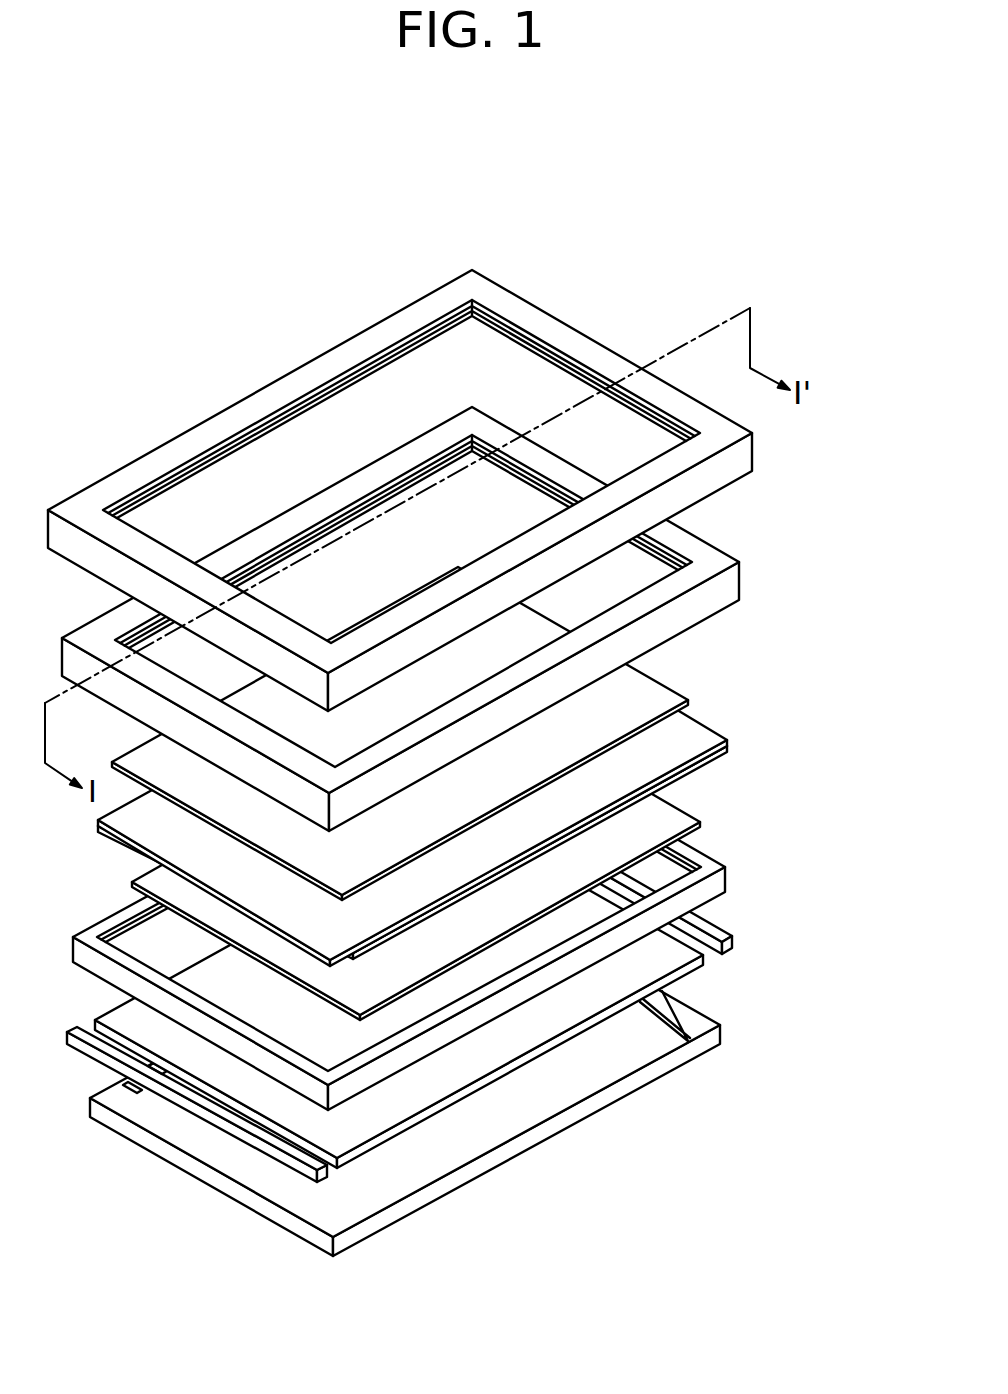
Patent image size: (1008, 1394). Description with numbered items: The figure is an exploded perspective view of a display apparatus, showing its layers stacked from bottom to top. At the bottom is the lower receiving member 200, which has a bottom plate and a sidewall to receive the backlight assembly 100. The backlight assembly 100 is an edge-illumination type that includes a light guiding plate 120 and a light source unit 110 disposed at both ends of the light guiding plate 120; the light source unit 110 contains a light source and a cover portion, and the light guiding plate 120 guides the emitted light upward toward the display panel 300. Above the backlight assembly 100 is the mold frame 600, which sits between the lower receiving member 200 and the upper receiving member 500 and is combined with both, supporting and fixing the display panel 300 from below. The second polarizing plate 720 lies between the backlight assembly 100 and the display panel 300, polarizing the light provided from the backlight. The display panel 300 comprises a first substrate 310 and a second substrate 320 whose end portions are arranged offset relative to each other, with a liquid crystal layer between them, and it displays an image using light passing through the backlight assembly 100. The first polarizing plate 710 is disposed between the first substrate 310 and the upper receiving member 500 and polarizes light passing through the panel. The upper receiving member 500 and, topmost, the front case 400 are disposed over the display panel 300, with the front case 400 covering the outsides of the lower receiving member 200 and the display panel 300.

The backlight assembly 100 is at (488, 984).
The light source unit 110 is at (730, 934).
The light guiding plate 120 is at (707, 958).
The lower receiving member 200 is at (749, 1027).
The display panel 300 is at (503, 783).
The first substrate 310 is at (707, 725).
The second substrate 320 is at (717, 756).
The front case 400 is at (742, 456).
The upper receiving member 500 is at (732, 582).
The mold frame 600 is at (724, 876).
The first polarizing plate 710 is at (668, 683).
The second polarizing plate 720 is at (672, 820).